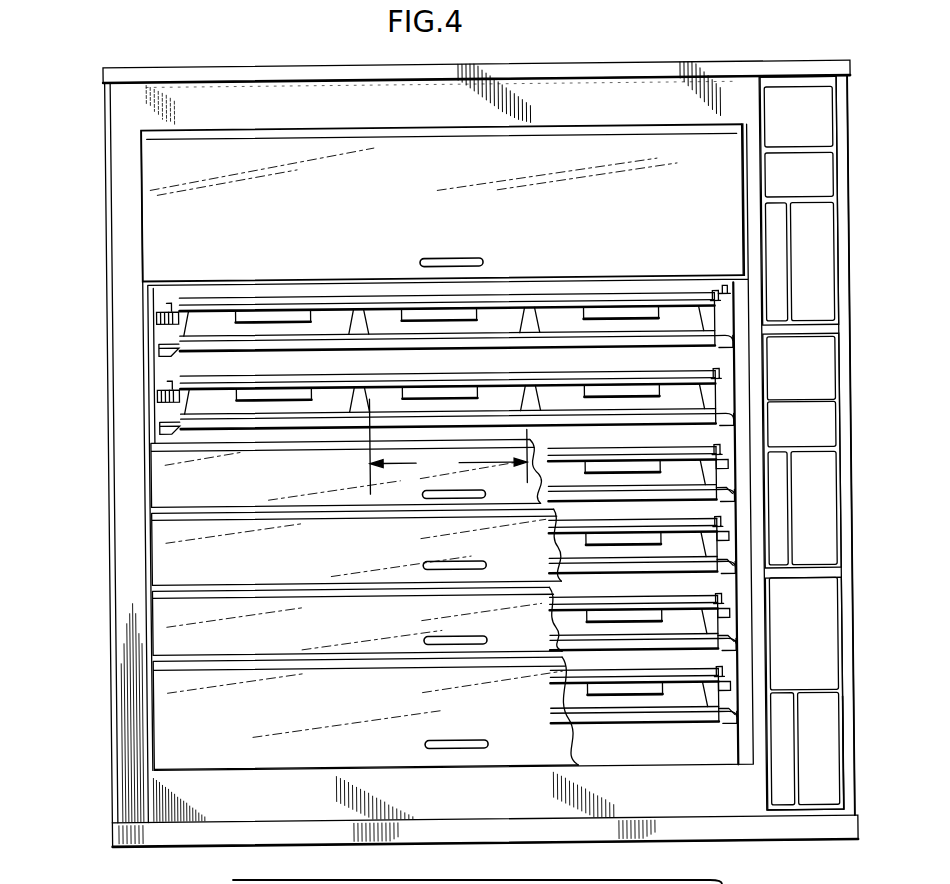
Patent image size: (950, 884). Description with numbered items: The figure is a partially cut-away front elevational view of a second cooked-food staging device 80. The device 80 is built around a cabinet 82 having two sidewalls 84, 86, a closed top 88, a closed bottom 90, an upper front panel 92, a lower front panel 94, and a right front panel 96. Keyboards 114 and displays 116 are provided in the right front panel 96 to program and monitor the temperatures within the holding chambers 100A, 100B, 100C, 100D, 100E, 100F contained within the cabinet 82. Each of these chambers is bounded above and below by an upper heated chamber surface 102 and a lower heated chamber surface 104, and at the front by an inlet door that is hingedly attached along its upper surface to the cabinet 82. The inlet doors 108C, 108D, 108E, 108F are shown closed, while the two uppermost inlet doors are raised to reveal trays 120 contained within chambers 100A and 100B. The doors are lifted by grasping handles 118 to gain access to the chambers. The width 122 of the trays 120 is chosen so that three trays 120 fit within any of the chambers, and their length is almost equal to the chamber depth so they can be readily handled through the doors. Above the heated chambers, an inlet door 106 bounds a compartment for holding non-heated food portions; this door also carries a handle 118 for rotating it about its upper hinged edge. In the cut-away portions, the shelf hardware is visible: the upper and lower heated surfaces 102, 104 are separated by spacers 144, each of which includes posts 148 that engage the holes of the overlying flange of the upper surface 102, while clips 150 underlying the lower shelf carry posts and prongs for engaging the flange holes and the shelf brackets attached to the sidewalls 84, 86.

The cooked-food staging device 80 is at (551, 52).
The cabinet 82 is at (698, 52).
The sidewall 84 is at (108, 200).
The sidewall 86 is at (850, 90).
The closed top 88 is at (248, 62).
The closed bottom 90 is at (131, 855).
The upper front panel 92 is at (310, 100).
The lower front panel 94 is at (188, 802).
The right front panel 96 is at (851, 783).
The holding chamber 100A is at (158, 318).
The holding chamber 100B is at (158, 412).
The holding chamber 100C is at (708, 478).
The holding chamber 100D is at (712, 550).
The holding chamber 100E is at (712, 625).
The holding chamber 100F is at (712, 698).
The upper heated chamber surface 102 is at (158, 307).
The lower heated chamber surface 104 is at (165, 333).
The inlet door 106 is at (208, 155).
The inlet door 108C is at (170, 478).
The inlet door 108D is at (170, 548).
The inlet door 108E is at (170, 620).
The inlet door 108F is at (182, 715).
The keyboard 114 is at (817, 225).
The display 116 is at (813, 160).
The handle 118 is at (450, 258).
The tray 120 is at (337, 292).
The width 122 is at (448, 446).
The spacer 144 is at (728, 290).
The post 148 is at (712, 282).
The clip 150 is at (718, 392).